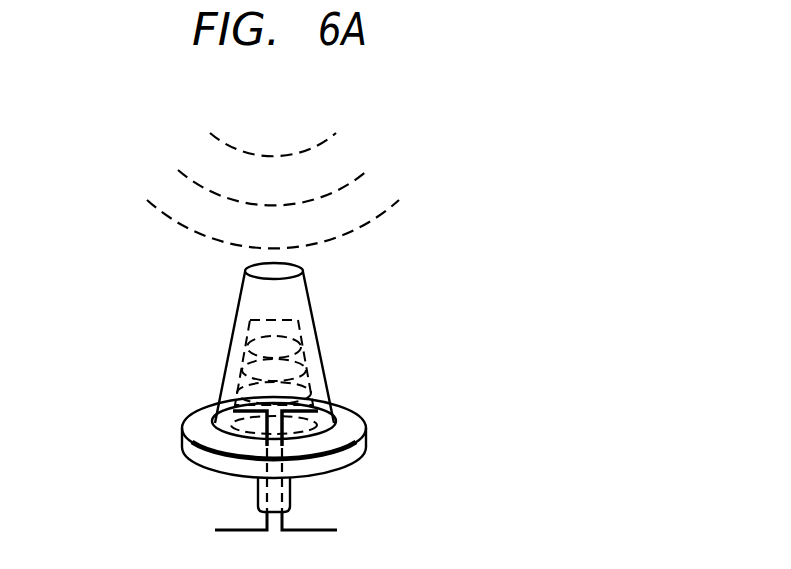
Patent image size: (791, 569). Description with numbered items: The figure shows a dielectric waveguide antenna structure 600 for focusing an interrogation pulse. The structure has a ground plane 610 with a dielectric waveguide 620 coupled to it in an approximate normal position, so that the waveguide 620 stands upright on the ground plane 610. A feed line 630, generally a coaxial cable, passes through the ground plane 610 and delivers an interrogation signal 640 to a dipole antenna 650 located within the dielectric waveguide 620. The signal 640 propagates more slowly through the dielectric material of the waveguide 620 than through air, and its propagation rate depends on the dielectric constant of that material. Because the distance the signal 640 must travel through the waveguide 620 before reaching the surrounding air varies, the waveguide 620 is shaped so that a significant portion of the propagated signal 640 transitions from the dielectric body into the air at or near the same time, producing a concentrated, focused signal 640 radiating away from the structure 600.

The dielectric waveguide antenna structure 600 is at (182, 488).
The ground plane 610 is at (355, 418).
The dielectric waveguide 620 is at (307, 352).
The feed line 630 is at (300, 503).
The interrogation signal 640 is at (145, 245).
The dipole antenna 650 is at (242, 405).